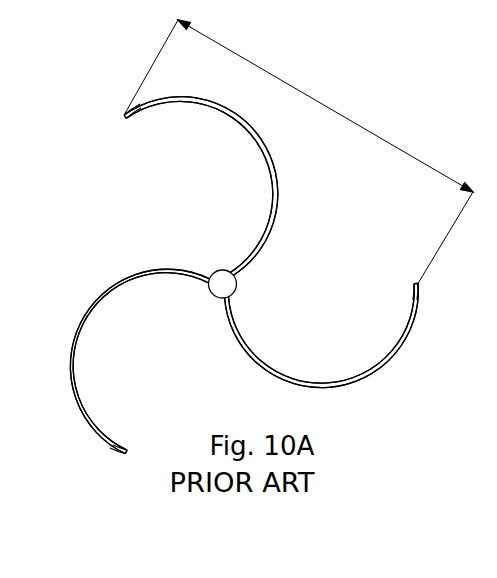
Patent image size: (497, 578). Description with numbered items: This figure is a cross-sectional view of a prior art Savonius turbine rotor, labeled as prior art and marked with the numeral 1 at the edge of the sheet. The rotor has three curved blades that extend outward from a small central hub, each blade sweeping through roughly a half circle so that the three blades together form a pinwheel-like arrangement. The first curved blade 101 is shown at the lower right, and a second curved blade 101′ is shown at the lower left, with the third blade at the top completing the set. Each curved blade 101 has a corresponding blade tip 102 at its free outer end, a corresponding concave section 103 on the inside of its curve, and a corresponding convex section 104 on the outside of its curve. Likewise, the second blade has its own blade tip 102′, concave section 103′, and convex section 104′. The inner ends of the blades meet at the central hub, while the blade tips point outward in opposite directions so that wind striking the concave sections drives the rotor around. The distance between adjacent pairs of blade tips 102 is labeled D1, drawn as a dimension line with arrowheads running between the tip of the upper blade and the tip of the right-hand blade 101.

The prior art rotor 1 is at (353, 199).
The distance between adjacent blade tips D1 is at (298, 151).
The curved blade 101 is at (347, 381).
The blade tip 102 is at (416, 284).
The concave section 103 is at (402, 337).
The convex section 104 is at (404, 343).
The curved blade 101′ is at (91, 317).
The blade tip 102′ is at (126, 452).
The concave section 103′ is at (81, 398).
The convex section 104′ is at (85, 419).